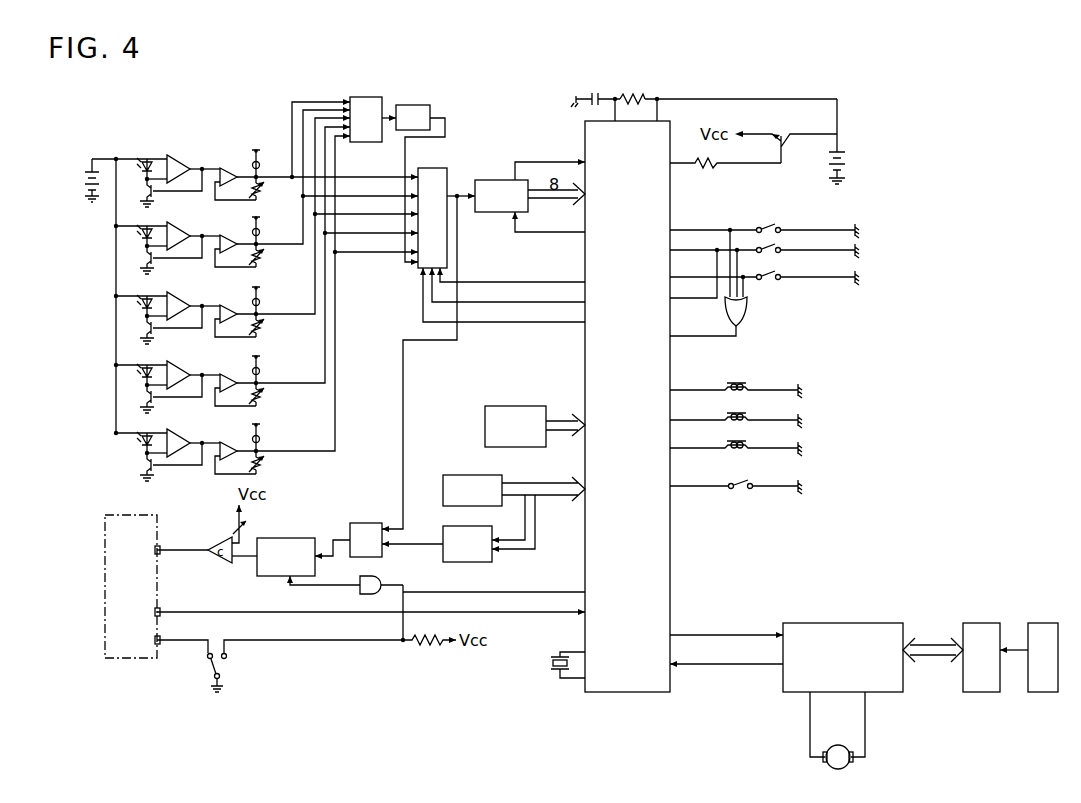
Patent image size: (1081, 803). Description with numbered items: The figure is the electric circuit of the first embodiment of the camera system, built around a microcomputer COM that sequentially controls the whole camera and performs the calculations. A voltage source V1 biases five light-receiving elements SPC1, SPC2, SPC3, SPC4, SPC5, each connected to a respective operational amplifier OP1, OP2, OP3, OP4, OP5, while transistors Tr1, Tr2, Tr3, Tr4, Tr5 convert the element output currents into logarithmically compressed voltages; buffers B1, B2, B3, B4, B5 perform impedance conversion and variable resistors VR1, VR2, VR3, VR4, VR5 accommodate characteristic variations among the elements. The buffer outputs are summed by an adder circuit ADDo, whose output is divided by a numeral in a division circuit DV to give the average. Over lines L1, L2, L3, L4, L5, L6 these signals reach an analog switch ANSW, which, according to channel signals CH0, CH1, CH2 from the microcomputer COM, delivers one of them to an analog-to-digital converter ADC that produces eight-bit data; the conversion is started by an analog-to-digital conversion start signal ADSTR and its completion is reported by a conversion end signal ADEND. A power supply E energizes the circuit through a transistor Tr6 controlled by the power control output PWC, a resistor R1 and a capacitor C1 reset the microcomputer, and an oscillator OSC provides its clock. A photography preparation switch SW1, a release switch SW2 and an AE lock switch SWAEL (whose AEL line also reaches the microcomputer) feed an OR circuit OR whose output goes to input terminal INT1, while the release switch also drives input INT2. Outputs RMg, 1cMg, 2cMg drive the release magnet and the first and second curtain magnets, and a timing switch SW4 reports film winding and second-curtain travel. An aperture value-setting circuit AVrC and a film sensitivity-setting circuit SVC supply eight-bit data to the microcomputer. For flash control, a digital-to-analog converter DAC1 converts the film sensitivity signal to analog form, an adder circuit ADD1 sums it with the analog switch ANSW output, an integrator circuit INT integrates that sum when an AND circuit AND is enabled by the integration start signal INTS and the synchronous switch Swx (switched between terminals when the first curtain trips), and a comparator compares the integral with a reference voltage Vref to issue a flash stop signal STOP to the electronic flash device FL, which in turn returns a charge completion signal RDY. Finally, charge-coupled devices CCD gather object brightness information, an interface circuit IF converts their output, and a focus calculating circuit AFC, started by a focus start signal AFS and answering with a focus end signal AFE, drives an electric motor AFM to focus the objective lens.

The voltage source V1 is at (88, 180).
The light-receiving element SPC1 is at (143, 166).
The light-receiving element SPC2 is at (139, 225).
The light-receiving element SPC3 is at (139, 295).
The light-receiving element SPC4 is at (139, 364).
The light-receiving element SPC5 is at (139, 432).
The operational amplifier OP1 is at (173, 163).
The operational amplifier OP2 is at (188, 227).
The operational amplifier OP3 is at (188, 297).
The operational amplifier OP4 is at (188, 366).
The operational amplifier OP5 is at (188, 434).
The transistor Tr1 is at (159, 197).
The transistor Tr2 is at (159, 264).
The transistor Tr3 is at (159, 334).
The transistor Tr4 is at (159, 403).
The transistor Tr5 is at (159, 471).
The buffer B1 is at (226, 167).
The buffer B2 is at (229, 231).
The buffer B3 is at (229, 301).
The buffer B4 is at (229, 370).
The buffer B5 is at (229, 438).
The variable resistor VR1 is at (259, 194).
The variable resistor VR2 is at (273, 248).
The variable resistor VR3 is at (273, 318).
The variable resistor VR4 is at (273, 387).
The variable resistor VR5 is at (273, 455).
The line L1 is at (327, 169).
The line L2 is at (327, 211).
The line L3 is at (327, 255).
The line L4 is at (327, 299).
The line L5 is at (327, 342).
The line L6 is at (419, 201).
The adder circuit ADDo is at (358, 97).
The division circuit DV is at (411, 105).
The analog switch ANSW is at (424, 168).
The analog-to-digital converter ADC is at (481, 180).
The analog-to-digital conversion end signal ADEND is at (550, 161).
The analog-to-digital conversion start signal ADSTR is at (548, 222).
The channel CH0 is at (502, 295).
The channel CH1 is at (507, 285).
The channel CH2 is at (511, 273).
The microcomputer COM is at (625, 692).
The capacitor C1 is at (595, 90).
The resistor R1 is at (628, 88).
The power supply E is at (851, 158).
The transistor Tr6 is at (788, 136).
The power control output terminal PWC is at (725, 155).
The photography preparation switch SW1 is at (764, 237).
The release switch SW2 is at (764, 259).
The AE lock switch SWAEL is at (764, 285).
The AE lock signal AEL is at (690, 265).
The OR circuit OR is at (745, 322).
The input terminal for interruption 1 INT1 is at (679, 329).
The input terminal for interruption 2 INT2 is at (669, 279).
The output terminal for release magnet RMg is at (736, 381).
The output terminal for first curtain magnet 1cMg is at (736, 412).
The output terminal for second curtain magnet 2cMg is at (736, 440).
The timing switch SW4 is at (736, 476).
The aperture value-setting circuit AVrC is at (535, 426).
The film sensitivity-setting circuit SVC is at (514, 490).
The digital-to-analog converter DAC1 is at (489, 542).
The adder circuit ADD1 is at (363, 523).
The integrator circuit INT is at (270, 538).
The AND circuit AND is at (358, 590).
The integration start signal INTS is at (494, 582).
The charge completion signal RDY is at (371, 604).
The electronic flash device FL is at (105, 516).
The flashlight stop signal STOP is at (182, 540).
The reference voltage Vref is at (230, 527).
The synchronous switch Swx is at (224, 669).
The oscillator OSC is at (548, 664).
The focus start signal AFS is at (726, 627).
The focus end signal AFE is at (726, 656).
The focus calculating circuit AFC is at (838, 623).
The electric motor AFM is at (851, 766).
The interface circuit IF is at (979, 623).
The charge-coupled devices CCD is at (1041, 623).